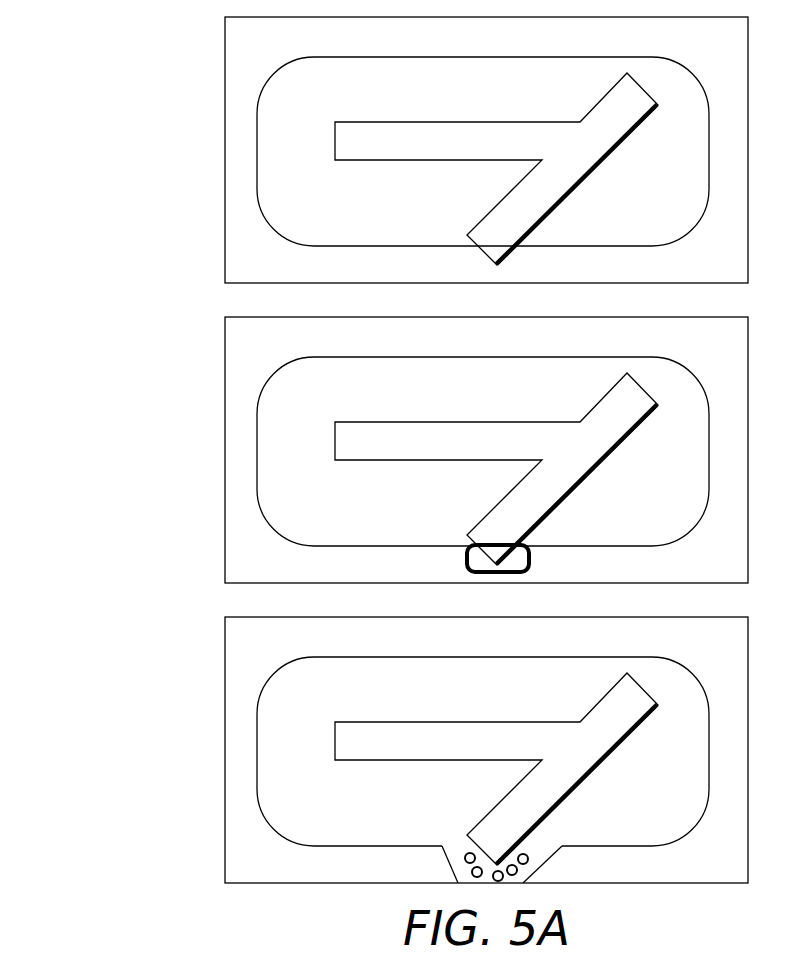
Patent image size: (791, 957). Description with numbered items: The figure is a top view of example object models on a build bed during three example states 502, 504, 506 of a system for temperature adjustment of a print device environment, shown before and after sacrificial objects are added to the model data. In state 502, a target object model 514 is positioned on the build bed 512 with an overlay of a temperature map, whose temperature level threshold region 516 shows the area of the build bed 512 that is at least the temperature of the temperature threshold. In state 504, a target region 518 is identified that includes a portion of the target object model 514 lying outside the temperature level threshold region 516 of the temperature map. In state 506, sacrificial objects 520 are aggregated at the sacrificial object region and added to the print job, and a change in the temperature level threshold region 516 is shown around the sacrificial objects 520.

The state 502 is at (112, 63).
The state 504 is at (112, 410).
The state 506 is at (112, 700).
The build bed 512 is at (225, 152).
The target object model 514 is at (608, 94).
The temperature level threshold region 516 is at (316, 57).
The target region 518 is at (467, 560).
The sacrificial objects 520 is at (466, 850).